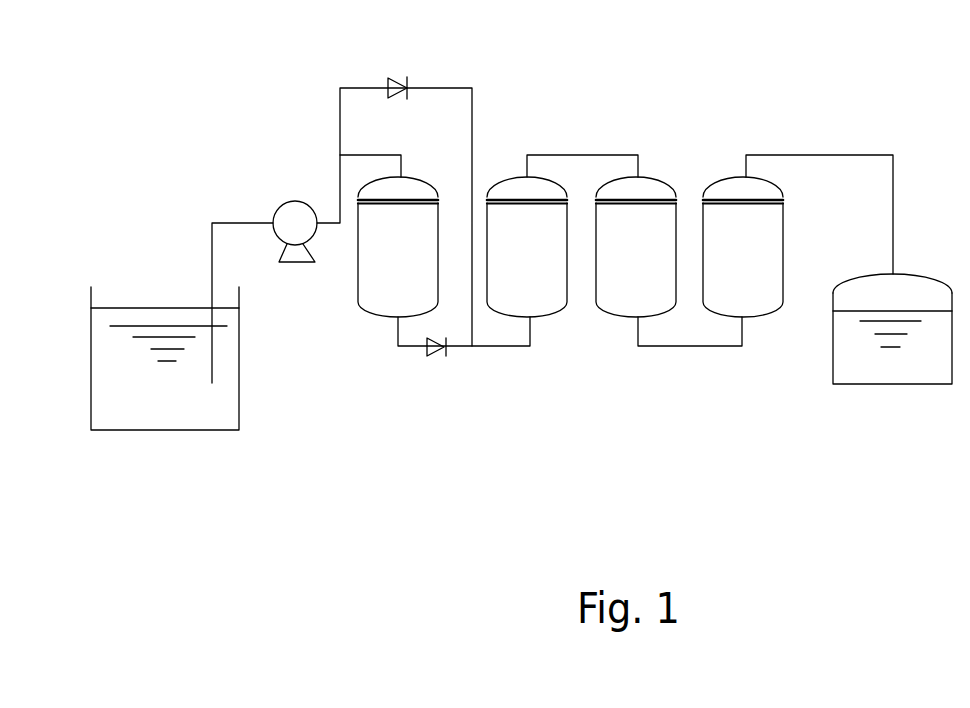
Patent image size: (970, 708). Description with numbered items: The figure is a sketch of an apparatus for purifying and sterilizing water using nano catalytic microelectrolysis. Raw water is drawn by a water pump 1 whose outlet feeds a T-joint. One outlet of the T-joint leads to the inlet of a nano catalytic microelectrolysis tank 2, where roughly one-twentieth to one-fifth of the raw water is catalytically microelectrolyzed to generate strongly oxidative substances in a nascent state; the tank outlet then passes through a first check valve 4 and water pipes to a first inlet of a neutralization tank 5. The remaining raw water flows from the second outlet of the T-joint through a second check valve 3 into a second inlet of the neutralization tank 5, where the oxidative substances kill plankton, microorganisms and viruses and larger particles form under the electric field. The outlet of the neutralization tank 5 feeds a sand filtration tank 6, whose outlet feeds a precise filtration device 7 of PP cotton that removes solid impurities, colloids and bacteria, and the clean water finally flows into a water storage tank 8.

The water pump 1 is at (295, 201).
The nano catalytic microelectrolysis tank 2 is at (388, 318).
The second check valve 3 is at (393, 78).
The first check valve 4 is at (434, 356).
The neutralization tank 5 is at (533, 318).
The sand filtration tank 6 is at (622, 318).
The precise filtration device 7 is at (744, 320).
The water storage tank 8 is at (893, 384).